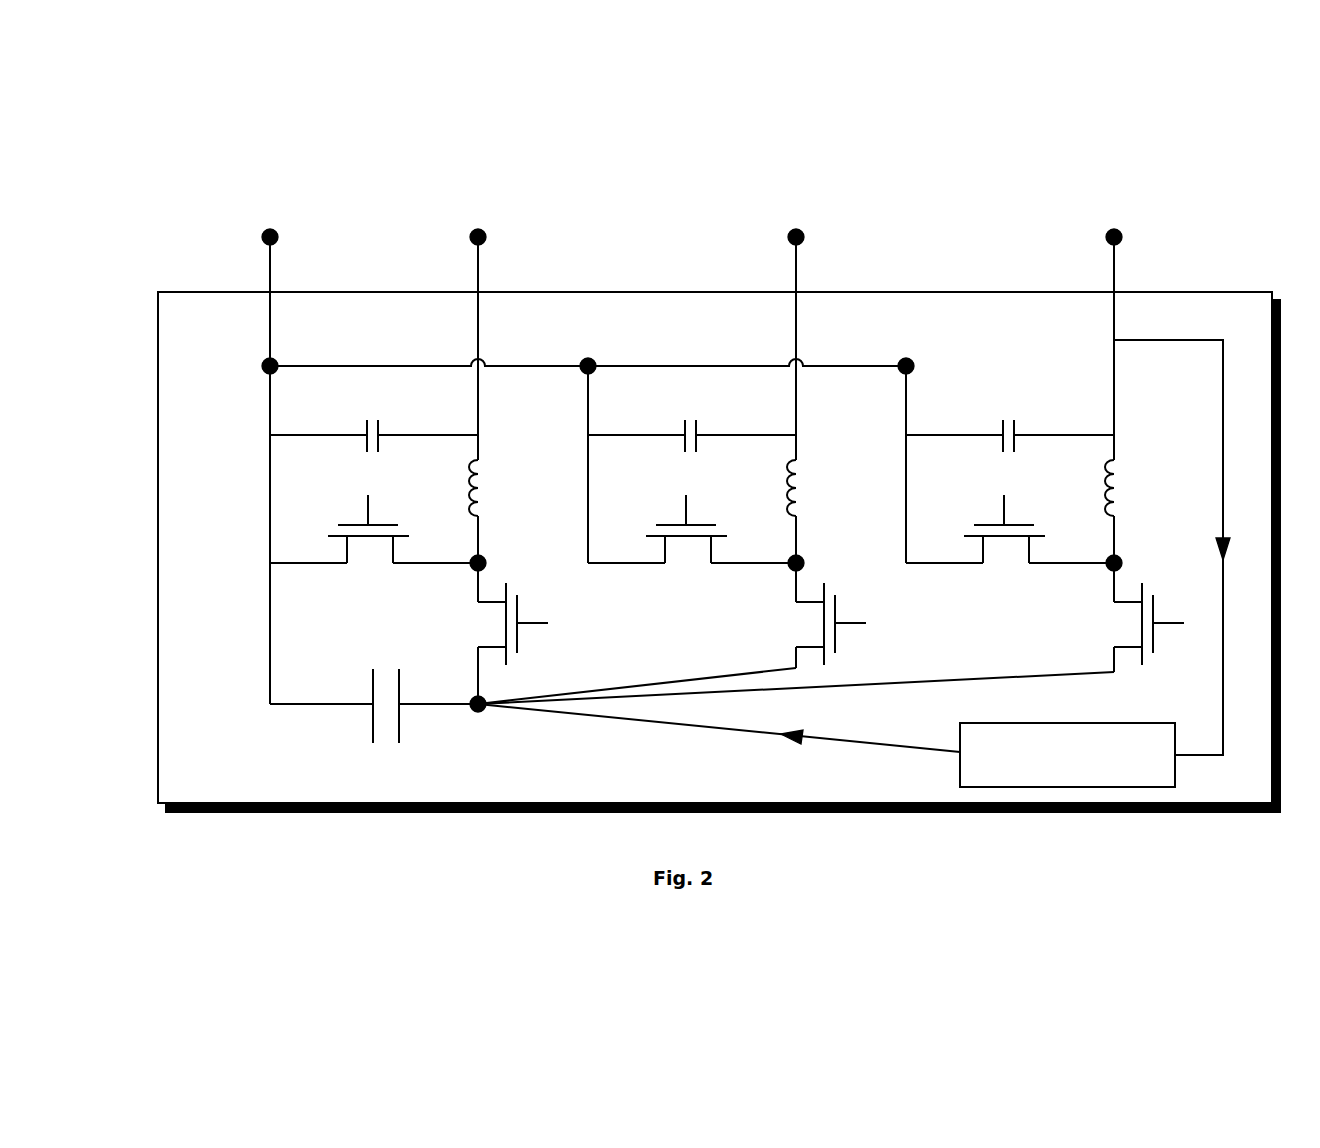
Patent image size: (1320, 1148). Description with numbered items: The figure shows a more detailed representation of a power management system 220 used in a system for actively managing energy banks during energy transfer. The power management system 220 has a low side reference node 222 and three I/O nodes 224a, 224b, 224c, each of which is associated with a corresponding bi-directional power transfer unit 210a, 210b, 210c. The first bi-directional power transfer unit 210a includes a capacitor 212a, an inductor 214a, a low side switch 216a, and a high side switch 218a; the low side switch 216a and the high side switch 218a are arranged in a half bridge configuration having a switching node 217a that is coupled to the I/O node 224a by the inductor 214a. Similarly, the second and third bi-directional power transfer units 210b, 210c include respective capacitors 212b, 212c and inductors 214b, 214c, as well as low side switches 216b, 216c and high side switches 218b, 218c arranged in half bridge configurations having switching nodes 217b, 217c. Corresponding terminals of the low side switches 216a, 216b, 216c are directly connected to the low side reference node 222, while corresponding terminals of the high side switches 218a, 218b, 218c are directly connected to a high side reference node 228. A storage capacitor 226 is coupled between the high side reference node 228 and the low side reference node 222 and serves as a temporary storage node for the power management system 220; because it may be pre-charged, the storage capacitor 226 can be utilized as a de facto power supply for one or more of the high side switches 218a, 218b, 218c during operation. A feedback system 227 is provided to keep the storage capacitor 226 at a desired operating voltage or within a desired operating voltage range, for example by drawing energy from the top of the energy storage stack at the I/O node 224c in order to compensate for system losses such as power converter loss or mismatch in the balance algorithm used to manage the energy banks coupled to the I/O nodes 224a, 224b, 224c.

The power management system 220 is at (1203, 178).
The bi-directional power transfer unit 210a is at (265, 221).
The bi-directional power transfer unit 210b is at (583, 221).
The bi-directional power transfer unit 210c is at (901, 221).
The low side reference node 222 is at (265, 362).
The I/O node 224a is at (480, 244).
The I/O node 224b is at (798, 244).
The I/O node 224c is at (1116, 244).
The capacitor 212a is at (361, 438).
The capacitor 212b is at (679, 438).
The capacitor 212c is at (997, 438).
The inductor 214a is at (492, 479).
The inductor 214b is at (810, 479).
The inductor 214c is at (1128, 479).
The low side switch 216a is at (366, 525).
The low side switch 216b is at (684, 525).
The low side switch 216c is at (1002, 525).
The switching node 217a is at (472, 570).
The switching node 217b is at (790, 570).
The switching node 217c is at (1108, 570).
The high side switch 218a is at (518, 637).
The high side switch 218b is at (836, 637).
The high side switch 218c is at (1156, 650).
The storage capacitor 226 is at (371, 730).
The feedback system 227 is at (854, 563).
The high side reference node 228 is at (480, 712).